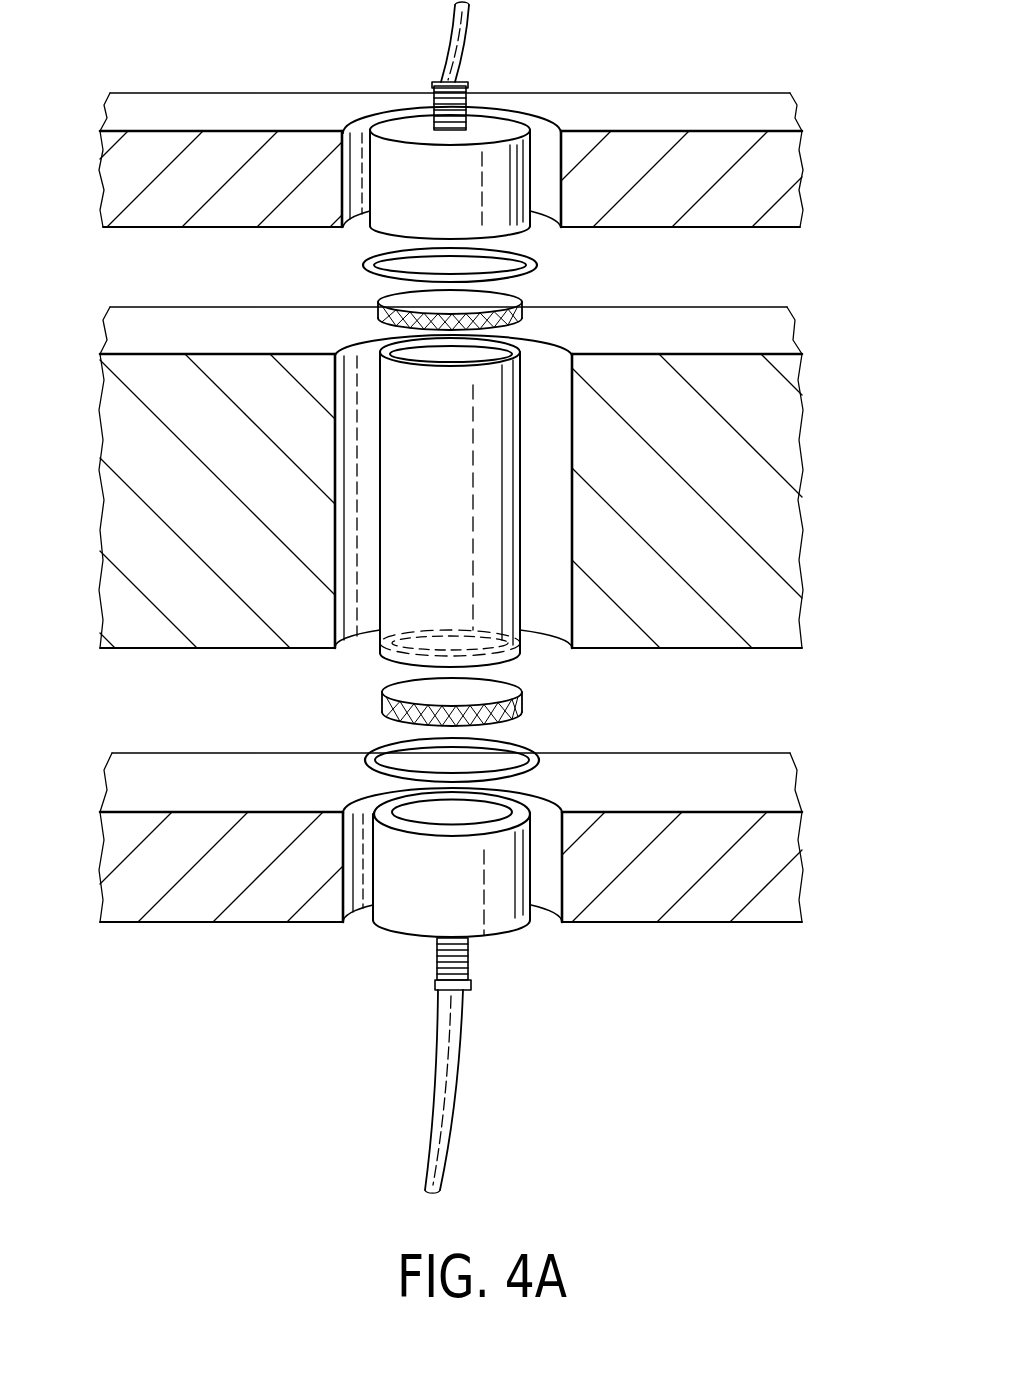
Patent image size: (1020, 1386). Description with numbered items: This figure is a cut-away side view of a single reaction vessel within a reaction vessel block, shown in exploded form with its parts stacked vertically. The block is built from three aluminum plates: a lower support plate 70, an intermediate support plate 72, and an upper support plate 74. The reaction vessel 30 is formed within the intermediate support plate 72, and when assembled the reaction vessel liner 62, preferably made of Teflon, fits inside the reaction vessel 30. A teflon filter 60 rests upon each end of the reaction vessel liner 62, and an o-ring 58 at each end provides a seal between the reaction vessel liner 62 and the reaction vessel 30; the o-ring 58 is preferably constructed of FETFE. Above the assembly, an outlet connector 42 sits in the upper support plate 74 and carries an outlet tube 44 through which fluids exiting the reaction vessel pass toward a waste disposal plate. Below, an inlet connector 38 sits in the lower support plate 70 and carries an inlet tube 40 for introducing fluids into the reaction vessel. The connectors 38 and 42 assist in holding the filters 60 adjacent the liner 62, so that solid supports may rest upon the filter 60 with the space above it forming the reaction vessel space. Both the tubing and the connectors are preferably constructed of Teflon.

The reaction vessel 30 is at (548, 560).
The inlet connector 38 is at (497, 912).
The inlet tube 40 is at (443, 1143).
The outlet connector 42 is at (498, 130).
The outlet tube 44 is at (455, 30).
The o-ring 58 is at (363, 265).
The teflon filter 60 is at (525, 298).
The reaction vessel liner 62 is at (493, 470).
The lower support plate 70 is at (648, 892).
The intermediate support plate 72 is at (712, 632).
The upper support plate 74 is at (650, 147).